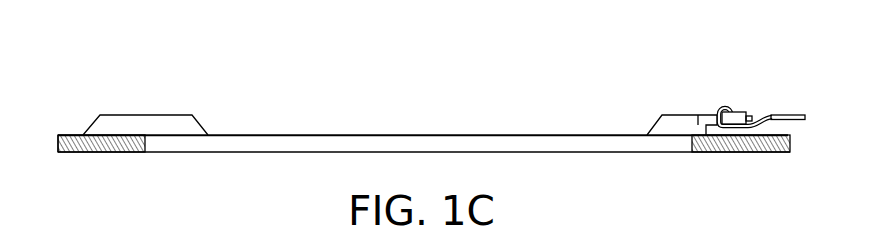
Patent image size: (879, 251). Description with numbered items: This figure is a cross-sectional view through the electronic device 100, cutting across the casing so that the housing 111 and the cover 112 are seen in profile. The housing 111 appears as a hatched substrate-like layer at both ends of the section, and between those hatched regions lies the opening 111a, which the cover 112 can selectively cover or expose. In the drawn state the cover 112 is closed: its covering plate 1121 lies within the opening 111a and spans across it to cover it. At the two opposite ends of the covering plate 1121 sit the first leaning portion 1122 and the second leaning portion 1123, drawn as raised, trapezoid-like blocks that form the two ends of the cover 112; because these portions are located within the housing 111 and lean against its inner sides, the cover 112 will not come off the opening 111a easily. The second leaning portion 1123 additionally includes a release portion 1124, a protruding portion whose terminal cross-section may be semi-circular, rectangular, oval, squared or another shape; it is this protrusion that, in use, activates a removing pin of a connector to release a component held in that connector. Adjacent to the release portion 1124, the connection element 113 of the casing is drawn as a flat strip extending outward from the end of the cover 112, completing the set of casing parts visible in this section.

The electronic device 100 is at (107, 68).
The housing 111 is at (112, 152).
The opening 111a is at (690, 143).
The cover 112 is at (698, 70).
The covering plate 1121 is at (433, 147).
The first leaning portion 1122 is at (162, 125).
The second leaning portion 1123 is at (682, 122).
The release portion 1124 is at (753, 119).
The connection element 113 is at (793, 114).